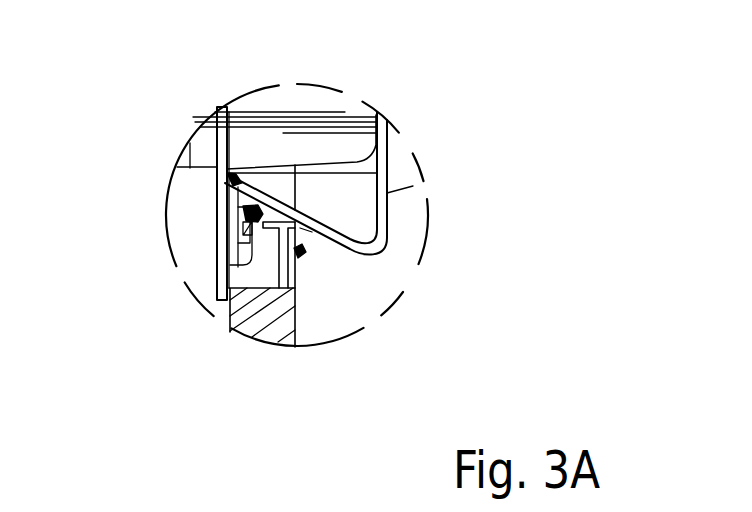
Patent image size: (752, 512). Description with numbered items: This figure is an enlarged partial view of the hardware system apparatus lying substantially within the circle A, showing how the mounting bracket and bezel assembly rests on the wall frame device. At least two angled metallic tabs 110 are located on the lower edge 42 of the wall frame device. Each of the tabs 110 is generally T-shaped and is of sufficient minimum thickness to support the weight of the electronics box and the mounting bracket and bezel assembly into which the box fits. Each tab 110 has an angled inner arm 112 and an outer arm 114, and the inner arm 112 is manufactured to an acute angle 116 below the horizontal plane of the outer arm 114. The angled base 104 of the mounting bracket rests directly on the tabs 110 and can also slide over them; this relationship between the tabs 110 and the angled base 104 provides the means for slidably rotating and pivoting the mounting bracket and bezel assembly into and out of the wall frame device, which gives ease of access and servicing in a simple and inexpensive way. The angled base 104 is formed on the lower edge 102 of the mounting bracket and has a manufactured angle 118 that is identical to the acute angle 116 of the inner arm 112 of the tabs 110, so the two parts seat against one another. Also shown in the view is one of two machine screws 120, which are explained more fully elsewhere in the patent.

The lower edge 102 is at (388, 167).
The angled base 104 is at (256, 178).
The angled metallic tabs 110 is at (247, 333).
The inner arm 112 is at (312, 232).
The outer arm 114 is at (278, 221).
The acute angle 116 is at (299, 256).
The manufactured angle 118 is at (231, 177).
The machine screw 120 is at (250, 266).
The lower edge 42 is at (293, 320).
The circle A is at (163, 212).